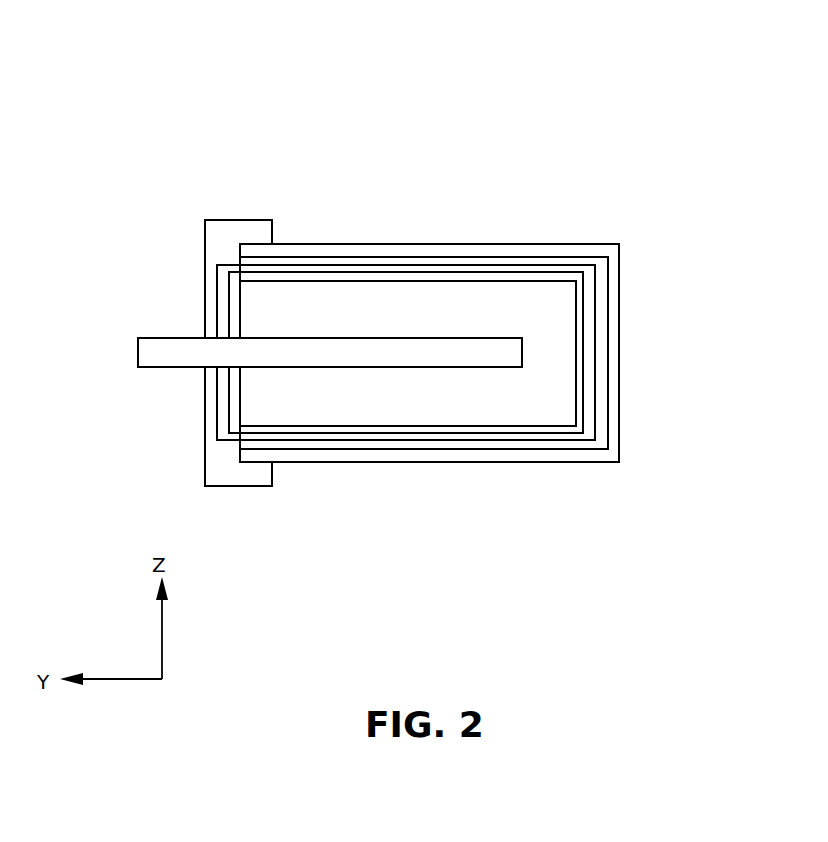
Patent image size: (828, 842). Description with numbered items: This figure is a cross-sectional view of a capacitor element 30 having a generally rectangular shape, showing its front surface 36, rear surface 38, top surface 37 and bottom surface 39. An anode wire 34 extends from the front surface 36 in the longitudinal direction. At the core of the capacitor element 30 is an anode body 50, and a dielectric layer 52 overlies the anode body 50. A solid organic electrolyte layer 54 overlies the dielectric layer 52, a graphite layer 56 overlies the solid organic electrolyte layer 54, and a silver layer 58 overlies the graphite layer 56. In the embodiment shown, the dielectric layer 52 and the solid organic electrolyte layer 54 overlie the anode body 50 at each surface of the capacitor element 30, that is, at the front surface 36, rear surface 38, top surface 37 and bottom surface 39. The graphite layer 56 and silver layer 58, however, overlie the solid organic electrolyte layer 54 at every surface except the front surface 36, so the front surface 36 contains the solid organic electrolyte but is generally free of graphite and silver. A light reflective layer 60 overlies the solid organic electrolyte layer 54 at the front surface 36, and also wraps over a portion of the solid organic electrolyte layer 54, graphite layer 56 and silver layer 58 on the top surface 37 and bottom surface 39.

The capacitor element 30 is at (350, 100).
The anode wire 34 is at (412, 345).
The front surface 36 is at (203, 411).
The top surface 37 is at (432, 242).
The rear surface 38 is at (619, 348).
The bottom surface 39 is at (422, 460).
The anode body 50 is at (507, 303).
The dielectric layer 52 is at (578, 282).
The solid organic electrolyte layer 54 is at (587, 310).
The graphite layer 56 is at (600, 402).
The silver layer 58 is at (614, 440).
The light reflective layer 60 is at (203, 243).